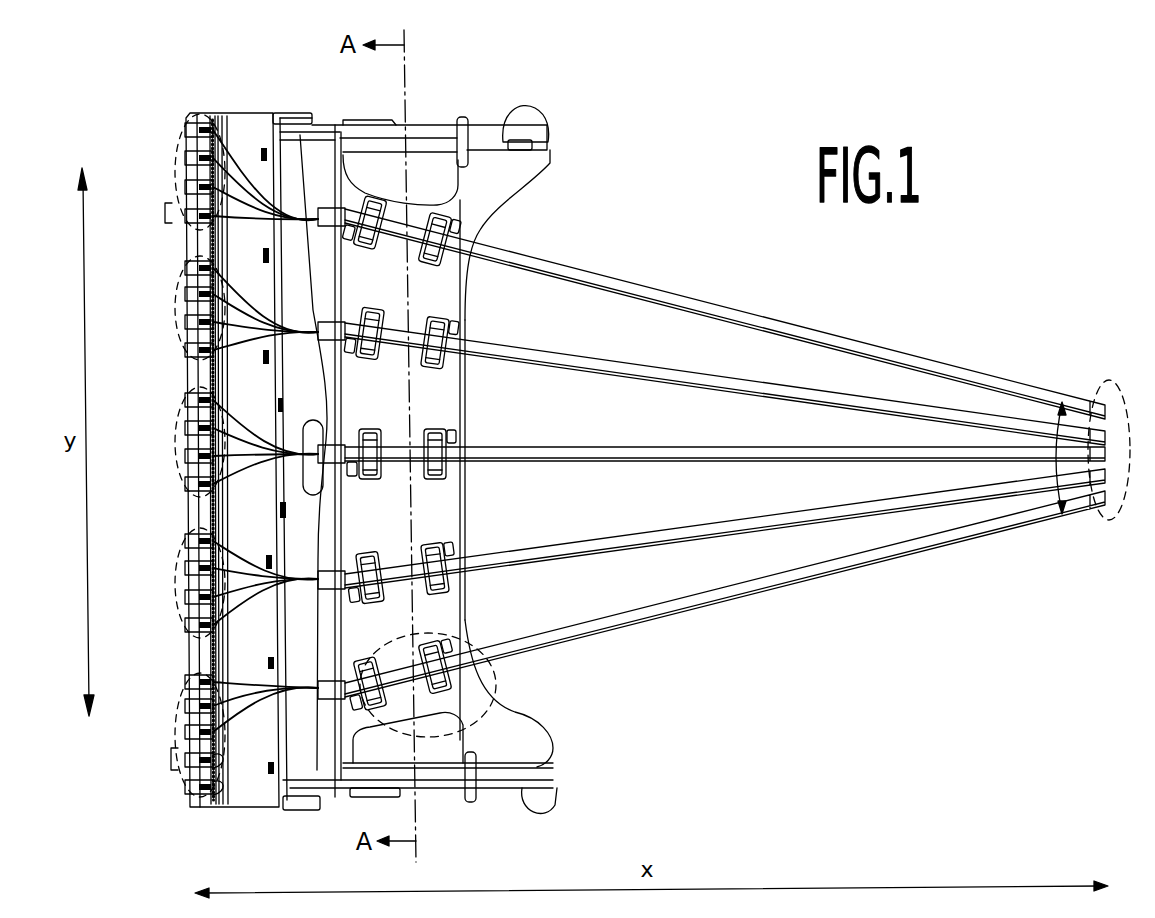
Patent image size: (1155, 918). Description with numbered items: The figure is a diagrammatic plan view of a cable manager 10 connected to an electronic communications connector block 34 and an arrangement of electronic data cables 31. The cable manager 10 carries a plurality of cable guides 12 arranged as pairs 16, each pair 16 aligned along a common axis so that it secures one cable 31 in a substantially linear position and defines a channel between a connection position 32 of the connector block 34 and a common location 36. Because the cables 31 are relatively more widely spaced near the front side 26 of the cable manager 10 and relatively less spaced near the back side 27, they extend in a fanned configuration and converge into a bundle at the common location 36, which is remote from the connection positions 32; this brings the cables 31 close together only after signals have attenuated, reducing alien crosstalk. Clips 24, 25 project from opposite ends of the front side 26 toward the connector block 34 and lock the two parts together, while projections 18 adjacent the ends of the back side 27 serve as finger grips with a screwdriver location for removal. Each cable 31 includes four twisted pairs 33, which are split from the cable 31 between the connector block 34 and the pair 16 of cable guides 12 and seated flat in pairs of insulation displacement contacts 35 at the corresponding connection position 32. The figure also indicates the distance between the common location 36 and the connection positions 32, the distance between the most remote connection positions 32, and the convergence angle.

The cable manager 10 is at (560, 160).
The cable guides 12 is at (378, 255).
The pair of cable guides 16 is at (500, 690).
The projections 18 is at (530, 120).
The clip 24 is at (313, 812).
The clip 25 is at (293, 112).
The front side 26 is at (340, 392).
The back side 27 is at (465, 422).
The electronic data cables 31 is at (860, 400).
The connection positions 32 is at (180, 165).
The twisted pairs 33 is at (255, 686).
The connector block 34 is at (244, 118).
The insulation displacement contacts 35 is at (163, 222).
The common location 36 is at (1100, 530).